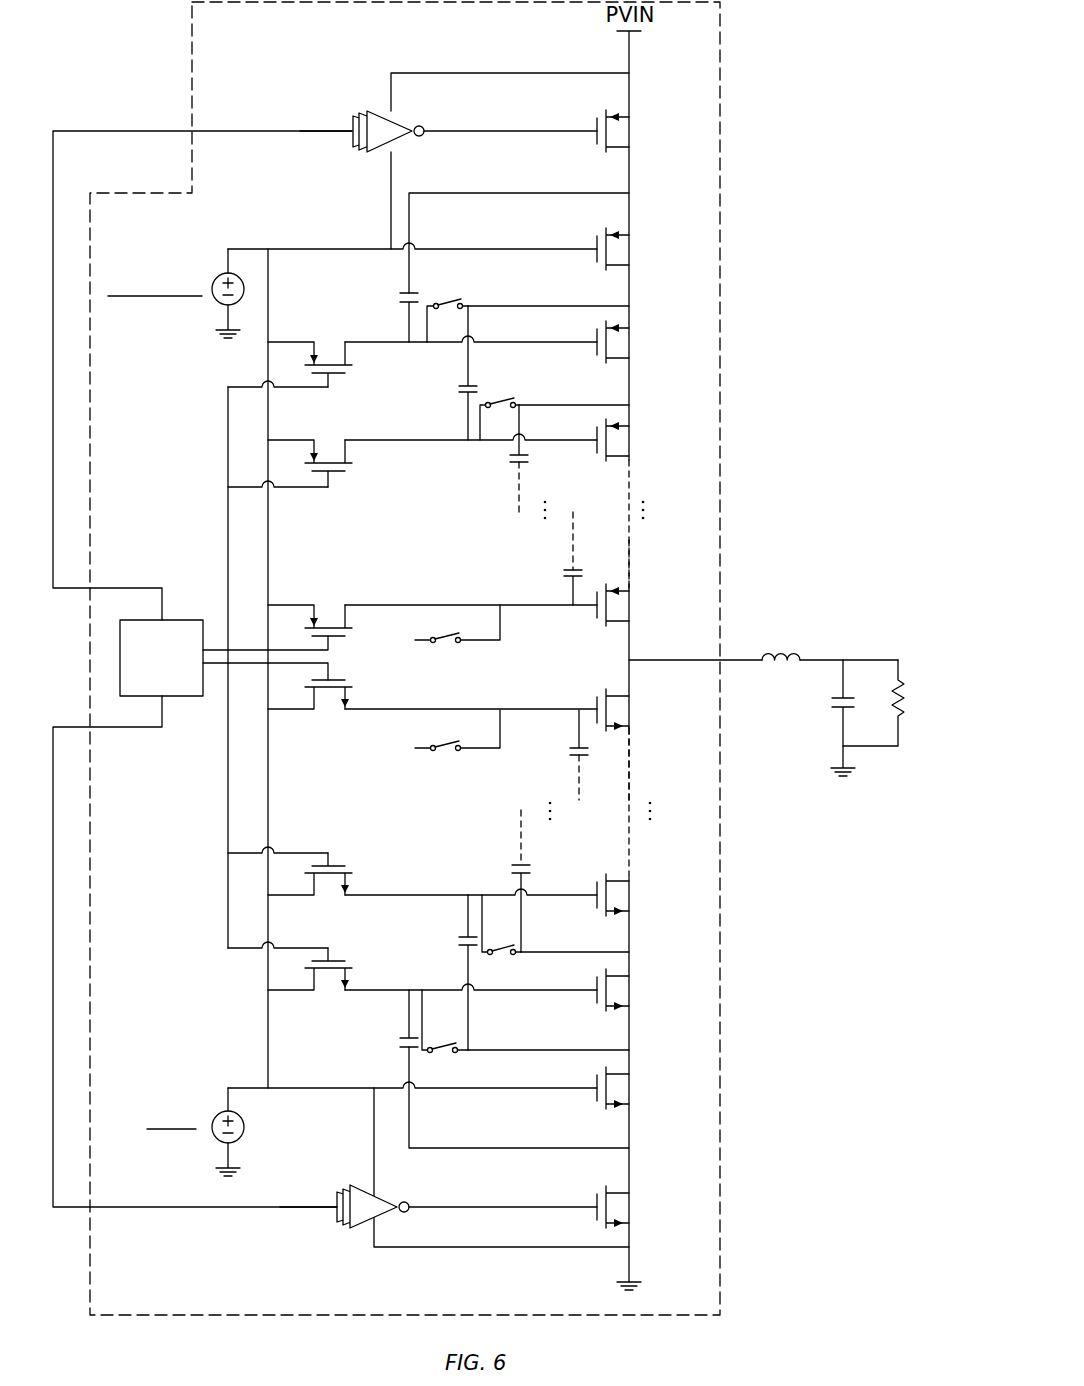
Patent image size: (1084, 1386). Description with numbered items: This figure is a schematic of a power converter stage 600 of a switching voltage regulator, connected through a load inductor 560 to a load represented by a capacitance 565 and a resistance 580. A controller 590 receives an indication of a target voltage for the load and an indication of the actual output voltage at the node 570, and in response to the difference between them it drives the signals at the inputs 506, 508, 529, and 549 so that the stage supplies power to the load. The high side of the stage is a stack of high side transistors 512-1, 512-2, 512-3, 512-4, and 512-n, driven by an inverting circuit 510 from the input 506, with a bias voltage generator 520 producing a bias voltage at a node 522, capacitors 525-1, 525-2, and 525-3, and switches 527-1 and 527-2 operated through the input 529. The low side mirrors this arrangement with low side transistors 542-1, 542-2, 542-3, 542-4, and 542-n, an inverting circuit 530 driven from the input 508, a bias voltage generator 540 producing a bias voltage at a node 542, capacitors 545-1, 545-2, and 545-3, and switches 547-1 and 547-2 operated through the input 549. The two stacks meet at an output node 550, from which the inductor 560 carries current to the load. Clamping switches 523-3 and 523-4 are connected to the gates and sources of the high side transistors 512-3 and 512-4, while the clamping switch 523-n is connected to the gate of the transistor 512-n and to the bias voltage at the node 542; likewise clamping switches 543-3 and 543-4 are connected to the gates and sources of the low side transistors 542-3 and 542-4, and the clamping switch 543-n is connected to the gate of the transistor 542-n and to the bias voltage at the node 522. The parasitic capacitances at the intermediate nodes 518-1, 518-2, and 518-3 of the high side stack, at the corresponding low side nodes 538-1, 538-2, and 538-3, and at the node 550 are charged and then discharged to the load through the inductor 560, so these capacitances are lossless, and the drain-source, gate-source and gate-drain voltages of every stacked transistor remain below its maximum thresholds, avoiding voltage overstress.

The input 506 is at (324, 117).
The input 508 is at (304, 1194).
The inverting circuit 510 is at (372, 112).
The high side transistor 512-1 is at (642, 131).
The high side transistor 512-2 is at (642, 249).
The high side transistor 512-3 is at (642, 342).
The high side transistor 512-4 is at (642, 440).
The high side transistor 512-n is at (642, 605).
The node 518-1 is at (519, 228).
The node 518-2 is at (548, 292).
The node 518-3 is at (574, 388).
The bias voltage generator 520 is at (212, 272).
The node 522 is at (415, 748).
The clamping switch 523-3 is at (458, 305).
The clamping switch 523-4 is at (513, 406).
The clamping switch 523-n is at (457, 624).
The capacitor 525-1 is at (379, 310).
The capacitor 525-2 is at (436, 373).
The capacitor 525-3 is at (487, 458).
The switch 527-1 is at (432, 349).
The switch 527-2 is at (432, 449).
The input 529 is at (256, 664).
The inverting circuit 530 is at (358, 1230).
The low-side intermediate node 1 538-1 is at (519, 1097).
The low-side intermediate node 2 538-2 is at (548, 1033).
The low-side intermediate node 3 538-3 is at (575, 936).
The bias voltage generator 540 is at (245, 1126).
The node 542 is at (415, 641).
The low side transistor 542-1 is at (642, 1207).
The low side transistor 542-2 is at (642, 1088).
The low side transistor 542-3 is at (642, 990).
The low side transistor 542-4 is at (642, 895).
The low side transistor 542-n is at (642, 710).
The clamping switch 543-3 is at (450, 1035).
The clamping switch 543-4 is at (510, 938).
The clamping switch 543-n is at (457, 730).
The capacitor 545-1 is at (379, 1024).
The capacitor 545-2 is at (436, 972).
The capacitor 545-3 is at (488, 881).
The switch 547-1 is at (432, 981).
The switch 547-2 is at (432, 888).
The input 549 is at (256, 897).
The node 550 is at (673, 661).
The load inductor 560 is at (783, 642).
The capacitance 565 is at (822, 718).
The node 570 is at (849, 642).
The resistance 580 is at (899, 703).
The controller 590 is at (177, 620).
The power converter stage 600 is at (722, 80).